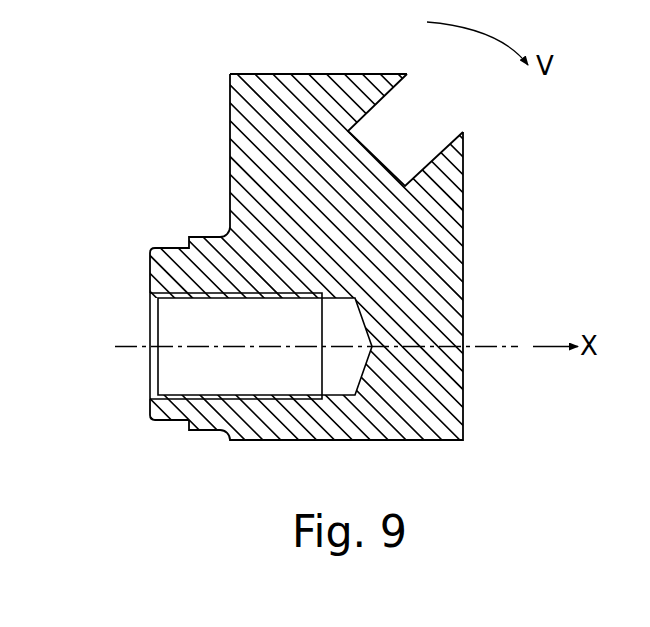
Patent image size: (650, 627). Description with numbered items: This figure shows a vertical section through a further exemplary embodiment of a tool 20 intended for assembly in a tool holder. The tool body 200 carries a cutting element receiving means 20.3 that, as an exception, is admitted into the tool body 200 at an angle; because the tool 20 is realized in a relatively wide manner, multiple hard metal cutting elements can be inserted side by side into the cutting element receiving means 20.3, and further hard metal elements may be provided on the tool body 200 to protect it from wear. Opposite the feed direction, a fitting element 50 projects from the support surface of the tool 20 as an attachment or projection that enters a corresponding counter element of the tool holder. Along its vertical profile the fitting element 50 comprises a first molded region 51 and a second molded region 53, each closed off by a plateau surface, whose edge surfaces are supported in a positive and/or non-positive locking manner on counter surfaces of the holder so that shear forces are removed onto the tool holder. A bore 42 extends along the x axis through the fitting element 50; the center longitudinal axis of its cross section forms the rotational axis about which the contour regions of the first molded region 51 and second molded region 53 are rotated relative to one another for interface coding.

The tool 20 is at (488, 247).
The cutting element receiving means 20.3 is at (423, 133).
The tool body 200 is at (260, 119).
The fitting element 50 is at (138, 268).
The bore 42 is at (173, 367).
The second molded region 53 is at (173, 412).
The first molded region 51 is at (205, 421).